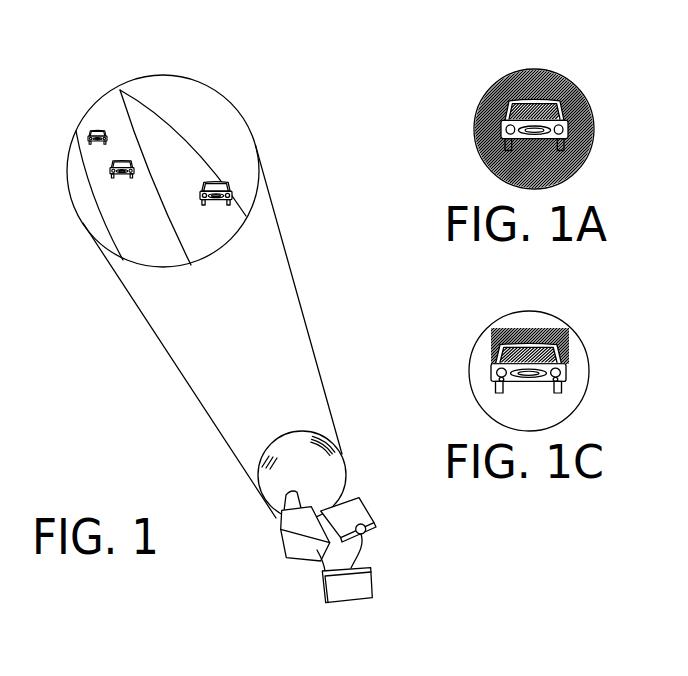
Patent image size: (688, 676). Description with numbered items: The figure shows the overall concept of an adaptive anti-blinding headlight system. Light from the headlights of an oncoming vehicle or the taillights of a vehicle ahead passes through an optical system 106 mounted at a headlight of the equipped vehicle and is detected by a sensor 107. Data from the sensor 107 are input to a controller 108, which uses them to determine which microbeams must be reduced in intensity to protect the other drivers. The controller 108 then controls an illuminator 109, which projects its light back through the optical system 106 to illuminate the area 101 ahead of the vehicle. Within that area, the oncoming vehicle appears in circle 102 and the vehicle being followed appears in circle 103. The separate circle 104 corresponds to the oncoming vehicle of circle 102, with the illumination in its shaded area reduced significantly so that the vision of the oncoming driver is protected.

In FIG. 1, the illuminated area 101 is at (236, 102).
In FIG. 1, the oncoming vehicle circle 102 is at (111, 170).
In FIG. 1A, the oncoming vehicle circle 102 is at (482, 156).
In FIG. 1, the followed vehicle circle 103 is at (217, 180).
In FIG. 1C, the reduced illumination circle 104 is at (553, 313).
In FIG. 1, the optical system 106 is at (282, 511).
In FIG. 1, the sensor 107 is at (282, 530).
In FIG. 1, the controller 108 is at (373, 578).
In FIG. 1, the illuminator 109 is at (375, 520).